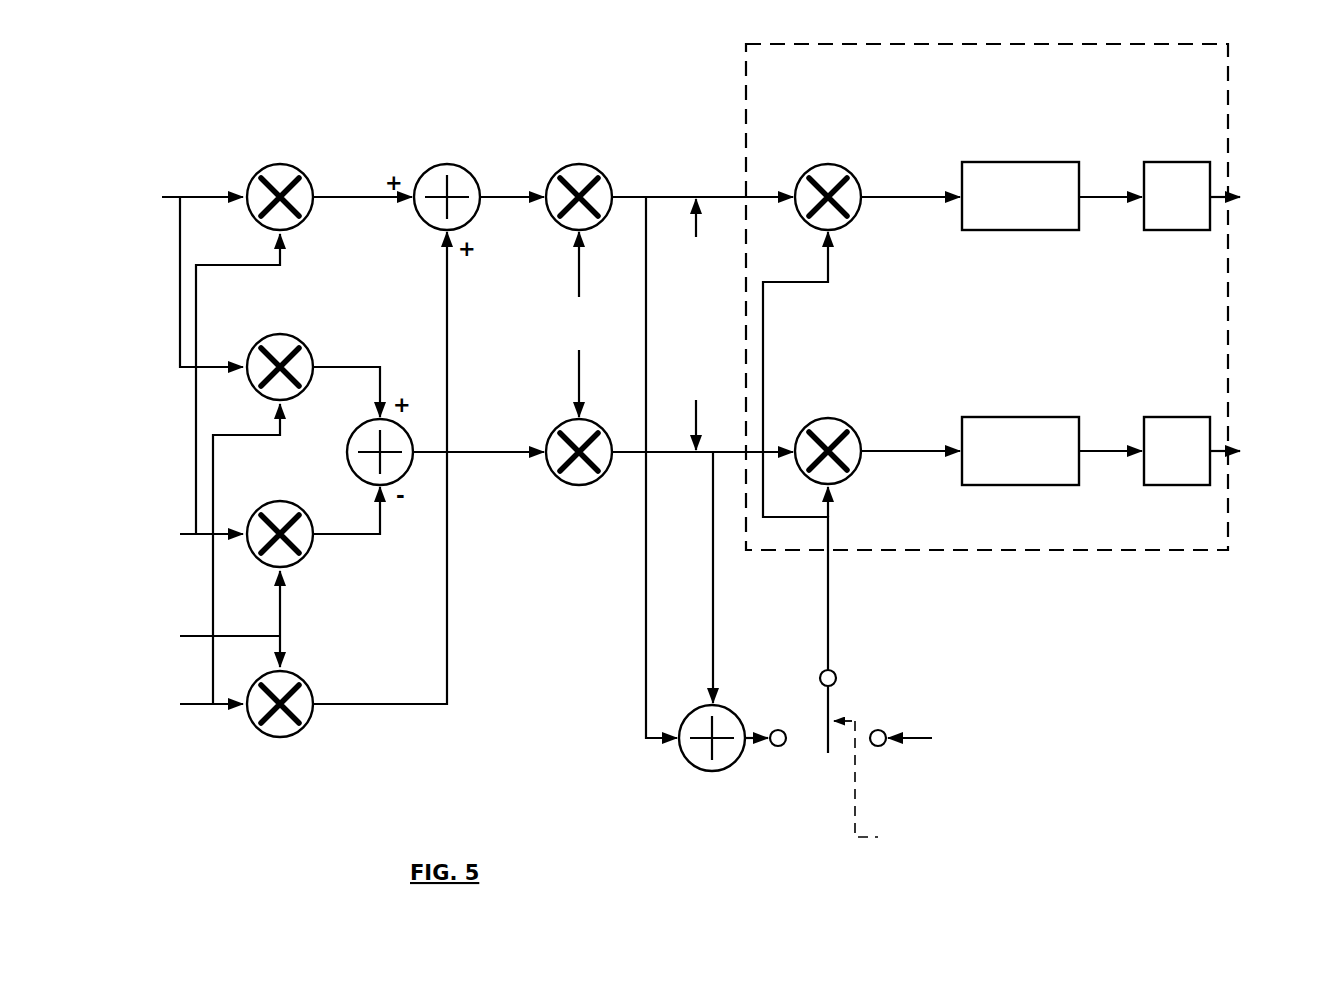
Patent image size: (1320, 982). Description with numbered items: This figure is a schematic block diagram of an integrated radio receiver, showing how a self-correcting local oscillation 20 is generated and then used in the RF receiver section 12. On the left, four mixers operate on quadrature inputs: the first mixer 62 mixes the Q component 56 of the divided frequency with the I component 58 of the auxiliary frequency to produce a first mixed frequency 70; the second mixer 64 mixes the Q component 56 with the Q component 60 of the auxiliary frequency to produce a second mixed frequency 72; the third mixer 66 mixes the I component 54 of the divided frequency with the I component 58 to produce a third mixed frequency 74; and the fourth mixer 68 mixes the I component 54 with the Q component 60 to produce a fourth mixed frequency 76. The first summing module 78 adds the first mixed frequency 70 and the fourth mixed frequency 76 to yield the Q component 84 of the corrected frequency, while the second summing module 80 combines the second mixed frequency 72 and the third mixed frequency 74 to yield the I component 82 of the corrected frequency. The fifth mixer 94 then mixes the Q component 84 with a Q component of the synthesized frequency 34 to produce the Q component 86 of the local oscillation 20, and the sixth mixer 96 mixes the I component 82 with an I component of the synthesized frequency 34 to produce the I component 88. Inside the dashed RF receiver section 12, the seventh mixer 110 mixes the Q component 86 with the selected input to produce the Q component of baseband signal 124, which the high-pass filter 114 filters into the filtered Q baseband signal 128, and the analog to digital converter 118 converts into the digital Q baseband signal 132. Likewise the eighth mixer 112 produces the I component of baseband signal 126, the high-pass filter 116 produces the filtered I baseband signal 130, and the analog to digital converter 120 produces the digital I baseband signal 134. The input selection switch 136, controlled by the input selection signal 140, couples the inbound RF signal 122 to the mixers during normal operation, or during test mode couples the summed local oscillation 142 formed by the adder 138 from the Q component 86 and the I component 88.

The RF receiver section 12 is at (987, 297).
The local oscillation 20 is at (696, 324).
The synthesized frequency 34 is at (578, 324).
The I component of the divided frequency 54 is at (205, 619).
The Q component of the divided frequency 56 is at (186, 276).
The I component of the auxiliary frequency 58 is at (205, 390).
The Q component of the auxiliary frequency 60 is at (205, 560).
The first mixer 62 is at (280, 188).
The second mixer 64 is at (280, 358).
The third mixer 66 is at (280, 524).
The fourth mixer 68 is at (280, 721).
The first mixed frequency 70 is at (362, 212).
The second mixed frequency 72 is at (346, 378).
The third mixed frequency 74 is at (346, 526).
The fourth mixed frequency 76 is at (380, 482).
The first summing module 78 is at (447, 188).
The second summing module 80 is at (378, 441).
The I component of the corrected frequency 82 is at (478, 467).
The Q component of the corrected frequency 84 is at (512, 183).
The Q component of the local oscillation 86 is at (647, 467).
The I component of the local oscillation 88 is at (698, 577).
The fifth mixer 94 is at (579, 188).
The sixth mixer 96 is at (579, 470).
The seventh mixer 110 is at (882, 250).
The eighth mixer 112 is at (888, 482).
The high-pass filter 114 is at (1020, 196).
The high-pass filter 116 is at (1020, 451).
The analog to digital converter 118 is at (1177, 196).
The analog to digital converter 120 is at (1177, 451).
The inbound RF signal 122 is at (967, 738).
The Q component of baseband signal 124 is at (912, 192).
The I component of baseband signal 126 is at (896, 446).
The filtered Q baseband signal 128 is at (1112, 192).
The filtered I baseband signal 130 is at (1112, 456).
The digital Q baseband signal 132 is at (1257, 195).
The digital I baseband signal 134 is at (1256, 450).
The input selection switch 136 is at (899, 668).
The adder 138 is at (702, 753).
The input selection signal 140 is at (939, 793).
The summed local oscillation 142 is at (757, 765).